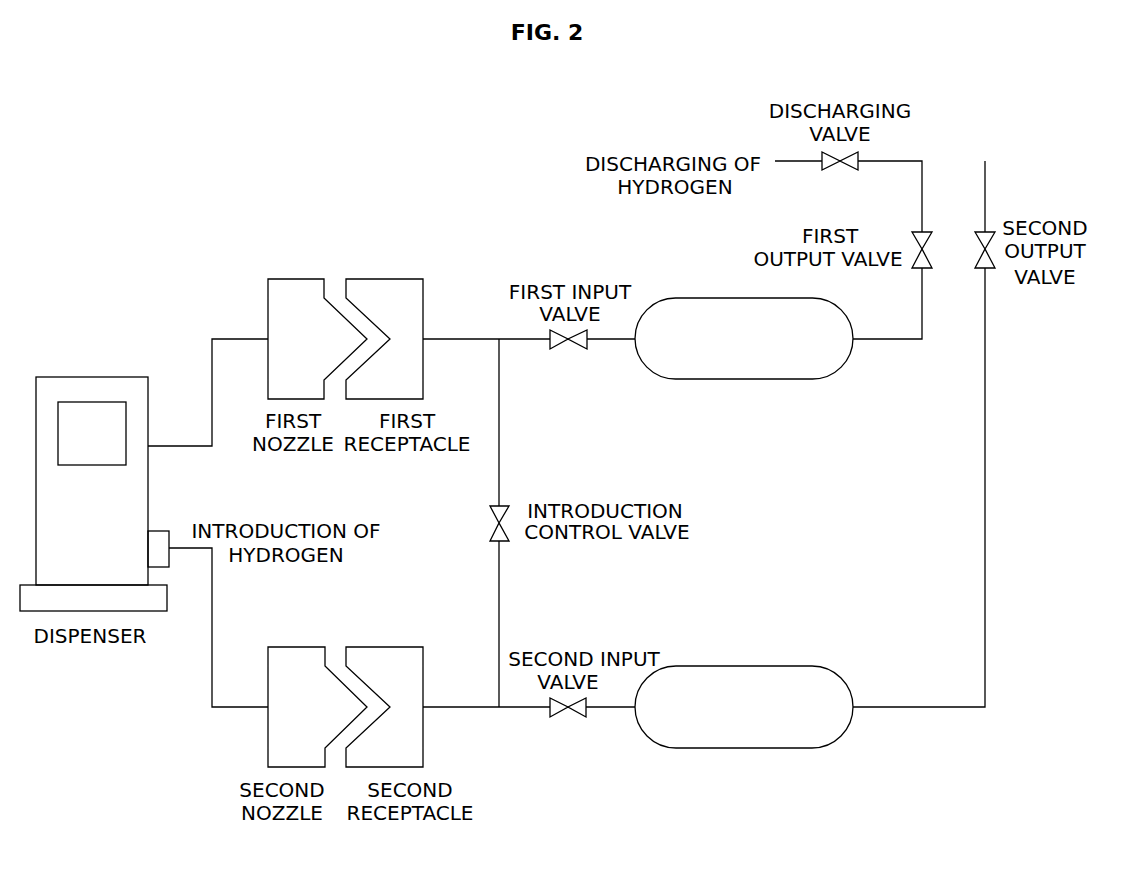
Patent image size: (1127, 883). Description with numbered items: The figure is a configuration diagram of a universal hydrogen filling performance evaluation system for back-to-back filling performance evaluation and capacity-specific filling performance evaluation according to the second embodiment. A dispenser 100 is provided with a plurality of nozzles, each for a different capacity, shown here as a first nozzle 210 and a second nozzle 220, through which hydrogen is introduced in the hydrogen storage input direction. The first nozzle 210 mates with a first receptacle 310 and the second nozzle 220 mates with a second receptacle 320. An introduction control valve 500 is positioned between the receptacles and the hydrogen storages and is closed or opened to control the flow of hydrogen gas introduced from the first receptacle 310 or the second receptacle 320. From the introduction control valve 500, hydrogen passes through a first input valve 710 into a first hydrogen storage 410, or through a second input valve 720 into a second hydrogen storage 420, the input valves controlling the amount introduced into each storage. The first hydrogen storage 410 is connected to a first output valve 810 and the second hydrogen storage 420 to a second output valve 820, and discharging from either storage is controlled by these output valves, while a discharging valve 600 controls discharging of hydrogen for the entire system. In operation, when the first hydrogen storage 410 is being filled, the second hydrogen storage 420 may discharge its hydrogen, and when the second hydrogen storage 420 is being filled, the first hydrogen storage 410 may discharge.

The dispenser 100 is at (73, 377).
The first nozzle 210 is at (293, 281).
The first receptacle 310 is at (388, 281).
The second nozzle 220 is at (293, 648).
The second receptacle 320 is at (387, 648).
The first hydrogen storage 410 is at (740, 380).
The second hydrogen storage 420 is at (737, 749).
The introduction control valve 500 is at (510, 540).
The discharging valve 600 is at (822, 166).
The first input valve 710 is at (572, 350).
The second input valve 720 is at (575, 718).
The first output valve 810 is at (927, 270).
The second output valve 820 is at (988, 270).